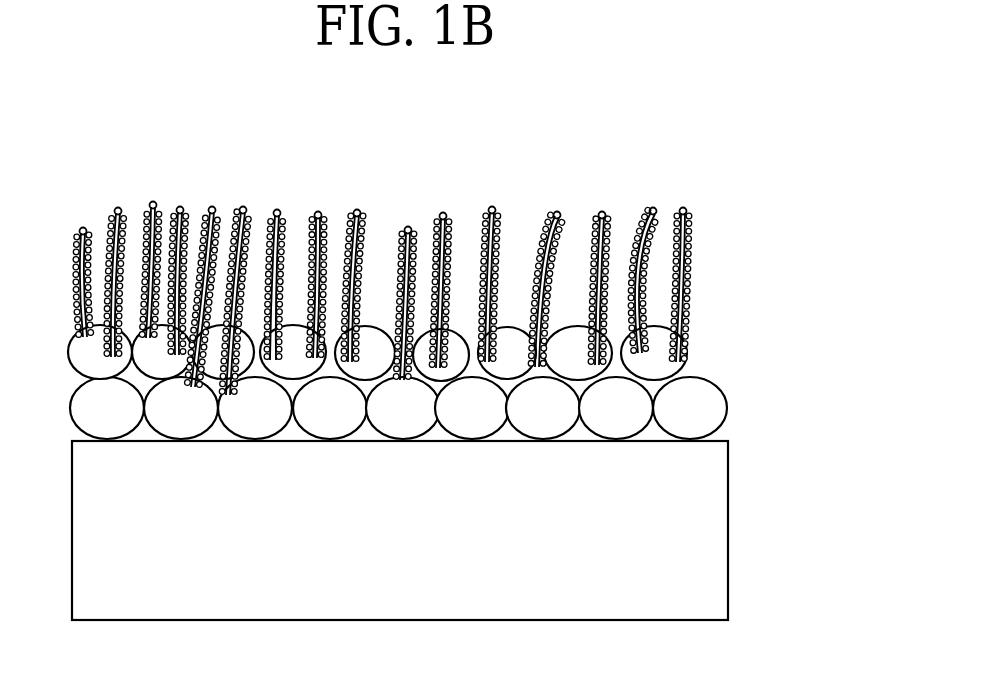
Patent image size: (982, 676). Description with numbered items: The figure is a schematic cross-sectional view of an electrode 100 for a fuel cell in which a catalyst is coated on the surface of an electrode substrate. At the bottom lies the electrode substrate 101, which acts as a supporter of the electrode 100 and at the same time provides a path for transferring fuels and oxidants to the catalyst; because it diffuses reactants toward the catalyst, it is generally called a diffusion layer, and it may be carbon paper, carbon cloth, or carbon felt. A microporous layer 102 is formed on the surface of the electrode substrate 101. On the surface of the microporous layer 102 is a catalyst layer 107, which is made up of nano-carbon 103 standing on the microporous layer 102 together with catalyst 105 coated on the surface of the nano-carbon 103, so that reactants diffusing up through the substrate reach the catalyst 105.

The electrode 100 is at (611, 181).
The electrode substrate 101 is at (708, 523).
The microporous layer 102 is at (738, 337).
The nano-carbon 103 is at (692, 266).
The catalyst 105 is at (693, 236).
The catalyst layer 107 is at (776, 195).